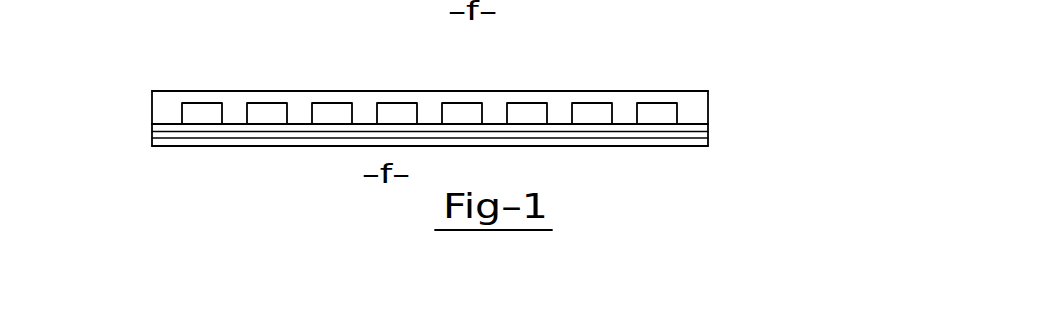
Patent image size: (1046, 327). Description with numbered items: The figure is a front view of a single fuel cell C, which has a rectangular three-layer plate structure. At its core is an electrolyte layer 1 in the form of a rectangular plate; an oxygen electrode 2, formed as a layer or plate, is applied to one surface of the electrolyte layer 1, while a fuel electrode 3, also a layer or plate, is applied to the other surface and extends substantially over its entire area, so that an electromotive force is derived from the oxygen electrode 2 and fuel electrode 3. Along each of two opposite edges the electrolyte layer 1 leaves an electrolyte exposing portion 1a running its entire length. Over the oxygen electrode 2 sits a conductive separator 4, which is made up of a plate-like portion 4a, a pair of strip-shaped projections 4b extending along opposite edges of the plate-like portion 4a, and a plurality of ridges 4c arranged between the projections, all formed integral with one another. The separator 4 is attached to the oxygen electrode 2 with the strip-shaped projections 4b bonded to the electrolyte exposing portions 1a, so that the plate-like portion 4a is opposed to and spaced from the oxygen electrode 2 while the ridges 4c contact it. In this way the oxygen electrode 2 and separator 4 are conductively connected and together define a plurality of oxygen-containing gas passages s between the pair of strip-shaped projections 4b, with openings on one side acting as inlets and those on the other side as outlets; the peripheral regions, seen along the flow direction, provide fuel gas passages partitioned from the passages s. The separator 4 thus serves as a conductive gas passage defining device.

The fuel cell C is at (134, 64).
The electrolyte layer 1 is at (702, 133).
The electrolyte exposing portion 1a is at (167, 125).
The oxygen electrode 2 is at (590, 123).
The fuel electrode 3 is at (632, 143).
The conductive separator 4 is at (448, 70).
The plate-like portion 4a is at (360, 95).
The strip-shaped projections 4b is at (172, 103).
The ridges 4c is at (300, 102).
The oxygen-containing gas passages s is at (258, 125).